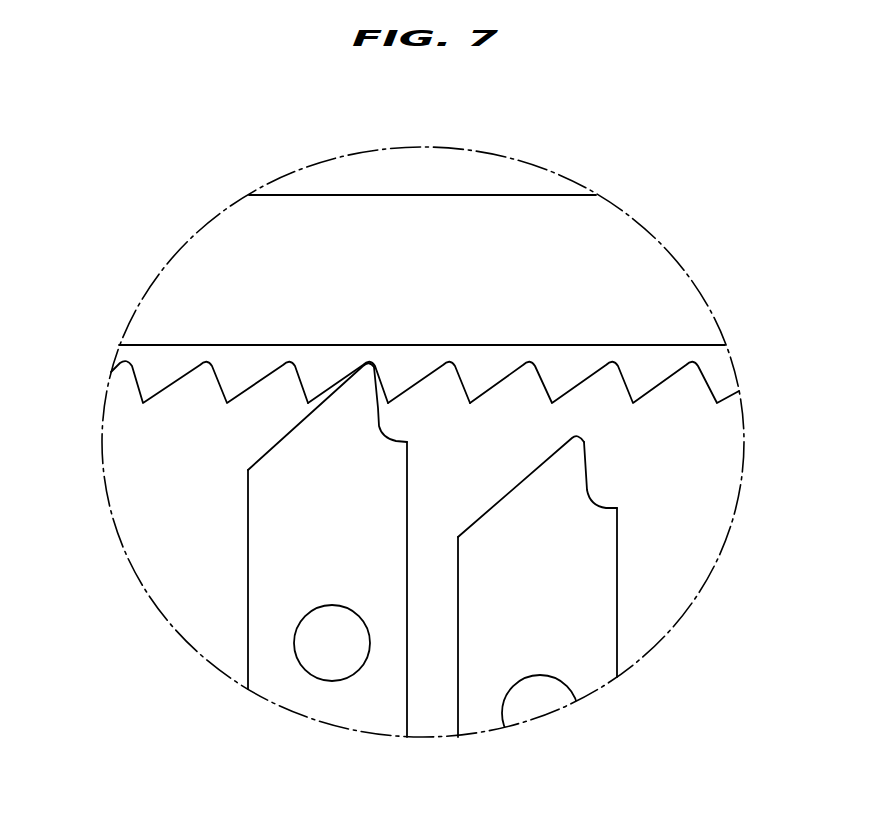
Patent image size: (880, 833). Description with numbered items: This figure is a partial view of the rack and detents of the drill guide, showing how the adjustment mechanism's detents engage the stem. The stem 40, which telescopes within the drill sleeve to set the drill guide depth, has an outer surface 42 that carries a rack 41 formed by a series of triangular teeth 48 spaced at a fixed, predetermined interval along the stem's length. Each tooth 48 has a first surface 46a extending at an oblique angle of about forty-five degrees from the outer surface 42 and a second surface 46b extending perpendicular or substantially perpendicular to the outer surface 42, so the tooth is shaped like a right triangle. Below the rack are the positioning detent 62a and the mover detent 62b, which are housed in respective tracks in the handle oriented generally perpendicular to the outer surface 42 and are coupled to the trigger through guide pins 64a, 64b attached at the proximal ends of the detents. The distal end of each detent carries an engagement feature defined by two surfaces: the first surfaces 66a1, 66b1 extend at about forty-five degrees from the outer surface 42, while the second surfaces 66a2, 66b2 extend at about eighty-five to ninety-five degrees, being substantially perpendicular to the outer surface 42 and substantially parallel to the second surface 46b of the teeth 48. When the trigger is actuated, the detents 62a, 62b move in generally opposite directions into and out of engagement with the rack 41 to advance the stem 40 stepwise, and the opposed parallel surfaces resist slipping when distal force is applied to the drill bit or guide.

The stem 40 is at (618, 257).
The rack 41 is at (134, 417).
The outer surface 42 is at (650, 345).
The teeth 48 is at (404, 333).
The first surface 46a is at (338, 380).
The second surface 46b is at (383, 382).
The positioning detent 62a is at (294, 565).
The mover detent 62b is at (597, 610).
The guide pin 64a is at (326, 660).
The guide pin 64b is at (545, 702).
The first surface 66a1 is at (272, 452).
The second surface 66a2 is at (378, 408).
The first surface 66b1 is at (515, 487).
The second surface 66b2 is at (587, 475).